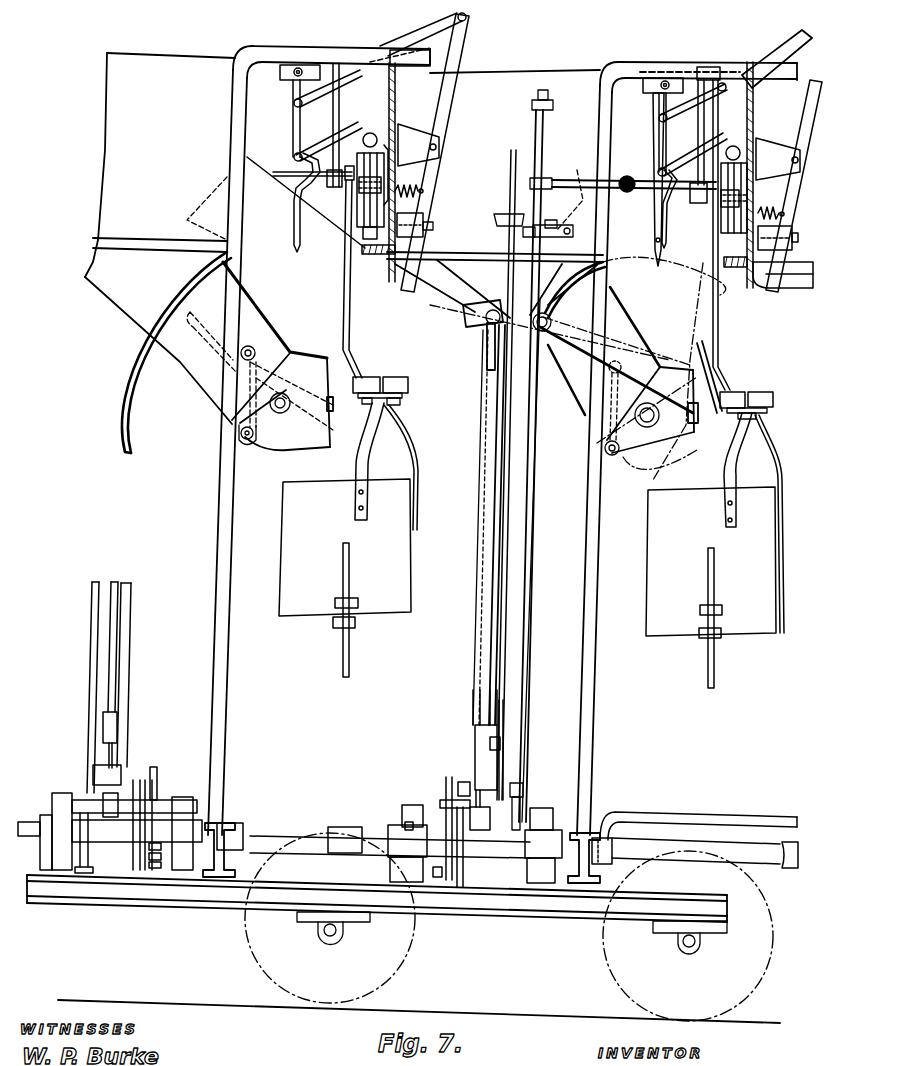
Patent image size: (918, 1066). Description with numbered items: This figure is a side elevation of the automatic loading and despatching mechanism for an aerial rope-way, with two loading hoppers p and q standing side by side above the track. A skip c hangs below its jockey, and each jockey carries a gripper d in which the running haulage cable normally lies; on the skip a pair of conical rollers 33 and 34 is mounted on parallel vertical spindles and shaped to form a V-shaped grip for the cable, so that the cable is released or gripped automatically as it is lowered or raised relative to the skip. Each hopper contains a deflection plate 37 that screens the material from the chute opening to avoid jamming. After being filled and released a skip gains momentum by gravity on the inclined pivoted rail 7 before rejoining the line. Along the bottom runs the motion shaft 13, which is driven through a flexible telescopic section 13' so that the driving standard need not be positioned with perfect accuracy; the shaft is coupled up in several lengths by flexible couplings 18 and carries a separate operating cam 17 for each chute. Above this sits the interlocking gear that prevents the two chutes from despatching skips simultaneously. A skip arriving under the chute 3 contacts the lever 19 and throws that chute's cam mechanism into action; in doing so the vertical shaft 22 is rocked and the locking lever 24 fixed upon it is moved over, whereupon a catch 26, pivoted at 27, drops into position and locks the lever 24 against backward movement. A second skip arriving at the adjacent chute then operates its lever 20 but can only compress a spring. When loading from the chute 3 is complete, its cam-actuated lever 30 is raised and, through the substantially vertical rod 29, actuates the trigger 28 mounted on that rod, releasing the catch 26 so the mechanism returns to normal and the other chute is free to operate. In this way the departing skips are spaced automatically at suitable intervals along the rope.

The loading hopper q is at (204, 68).
The loading hopper p is at (496, 75).
The deflection plate 37 is at (198, 207).
The lever 20 is at (347, 180).
The inclined pivoted rail 7 is at (362, 232).
The lever 19 is at (722, 175).
The trigger 28 is at (503, 214).
The vertical shaft 22 is at (531, 471).
The vertical rod 29 is at (503, 538).
The pivot 27 is at (572, 230).
The locking lever 24 is at (527, 233).
The catch 26 is at (551, 228).
The chute 3 is at (618, 329).
The roller 33 is at (368, 380).
The roller 34 is at (400, 380).
The gripper d is at (398, 402).
The skip c is at (392, 567).
The shaft 13 is at (290, 732).
The flexible coupling 18 is at (245, 830).
The cam lever 30 is at (474, 790).
The operating cam 17 is at (132, 867).
The flexible telescopic section 13' is at (695, 829).